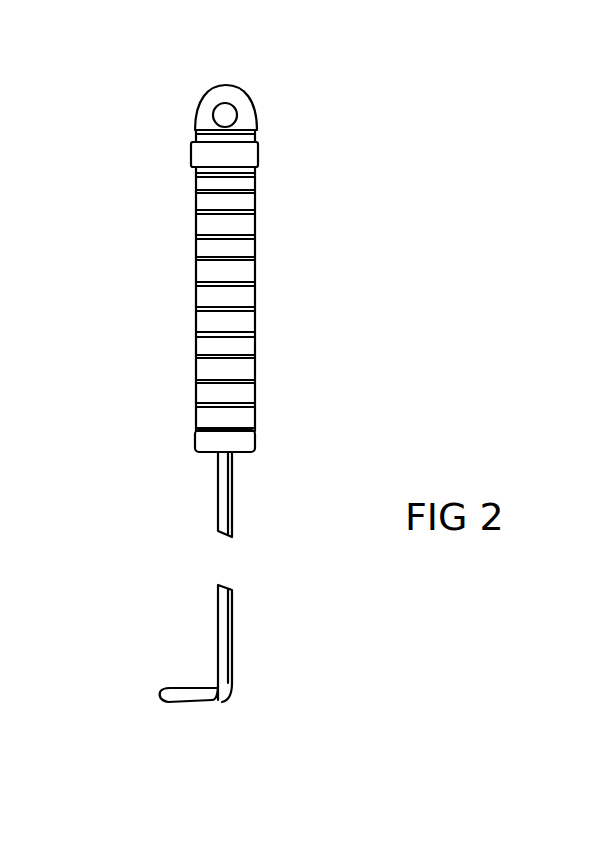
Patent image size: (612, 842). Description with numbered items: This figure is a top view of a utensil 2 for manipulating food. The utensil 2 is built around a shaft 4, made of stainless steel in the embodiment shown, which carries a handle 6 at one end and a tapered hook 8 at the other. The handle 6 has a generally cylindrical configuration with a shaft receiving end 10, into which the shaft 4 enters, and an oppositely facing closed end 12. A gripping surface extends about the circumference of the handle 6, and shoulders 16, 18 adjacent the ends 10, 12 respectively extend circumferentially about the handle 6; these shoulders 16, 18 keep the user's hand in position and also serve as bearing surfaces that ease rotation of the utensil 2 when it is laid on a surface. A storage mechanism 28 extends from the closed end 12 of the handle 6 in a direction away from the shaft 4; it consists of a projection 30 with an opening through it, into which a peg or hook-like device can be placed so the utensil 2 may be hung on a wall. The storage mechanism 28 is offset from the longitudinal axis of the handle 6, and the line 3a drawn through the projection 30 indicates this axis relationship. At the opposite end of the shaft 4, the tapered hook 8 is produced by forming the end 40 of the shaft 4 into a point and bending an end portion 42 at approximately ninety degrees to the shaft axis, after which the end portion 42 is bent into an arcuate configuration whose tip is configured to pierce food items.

The utensil 2 is at (344, 330).
The storage mechanism 28 is at (273, 111).
The projection 30 is at (227, 83).
The axis 3a is at (225, 115).
The closed end 12 is at (207, 131).
The shoulder 18 is at (260, 153).
The handle 6 is at (257, 235).
The shaft receiving end 10 is at (252, 452).
The shoulder 16 is at (197, 440).
The shaft 4 is at (233, 513).
The end of the shaft 40 is at (233, 680).
The end portion 42 is at (193, 687).
The tapered hook 8 is at (237, 698).